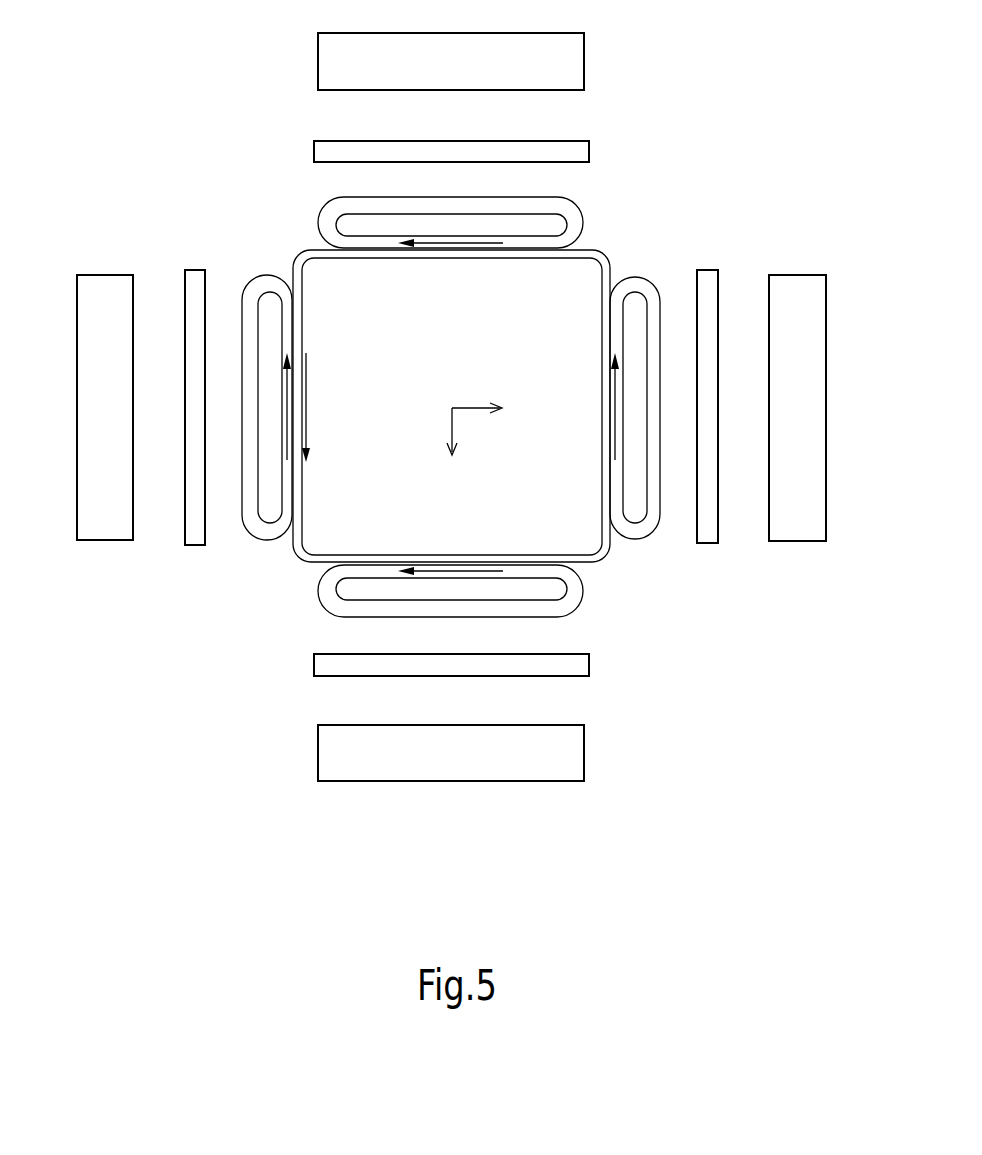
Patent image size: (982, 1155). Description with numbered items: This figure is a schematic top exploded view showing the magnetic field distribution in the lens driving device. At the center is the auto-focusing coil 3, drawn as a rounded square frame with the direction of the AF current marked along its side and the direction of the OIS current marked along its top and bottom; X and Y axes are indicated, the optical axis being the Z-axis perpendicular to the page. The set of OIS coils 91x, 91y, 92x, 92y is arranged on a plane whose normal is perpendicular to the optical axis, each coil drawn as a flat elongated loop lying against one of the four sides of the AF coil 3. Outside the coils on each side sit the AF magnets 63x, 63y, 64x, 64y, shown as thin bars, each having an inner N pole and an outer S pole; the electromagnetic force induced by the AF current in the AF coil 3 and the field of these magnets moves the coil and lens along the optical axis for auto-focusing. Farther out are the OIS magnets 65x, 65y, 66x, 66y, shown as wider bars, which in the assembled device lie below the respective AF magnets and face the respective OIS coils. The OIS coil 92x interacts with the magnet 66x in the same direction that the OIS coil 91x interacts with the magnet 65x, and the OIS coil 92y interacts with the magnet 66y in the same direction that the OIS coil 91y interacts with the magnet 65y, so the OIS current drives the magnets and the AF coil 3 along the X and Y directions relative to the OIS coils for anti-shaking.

The auto-focusing coil 3 is at (593, 250).
The OIS coil 92y is at (572, 209).
The OIS coil 91y is at (572, 605).
The OIS coil 92x is at (278, 528).
The OIS coil 91x is at (626, 529).
The OIS magnet 66y is at (572, 46).
The AF magnet 64y is at (572, 147).
The AF magnet 63y is at (572, 665).
The OIS magnet 65y is at (572, 768).
The OIS magnet 66x is at (108, 528).
The AF magnet 64x is at (195, 528).
The AF magnet 63x is at (708, 530).
The OIS magnet 65x is at (796, 530).